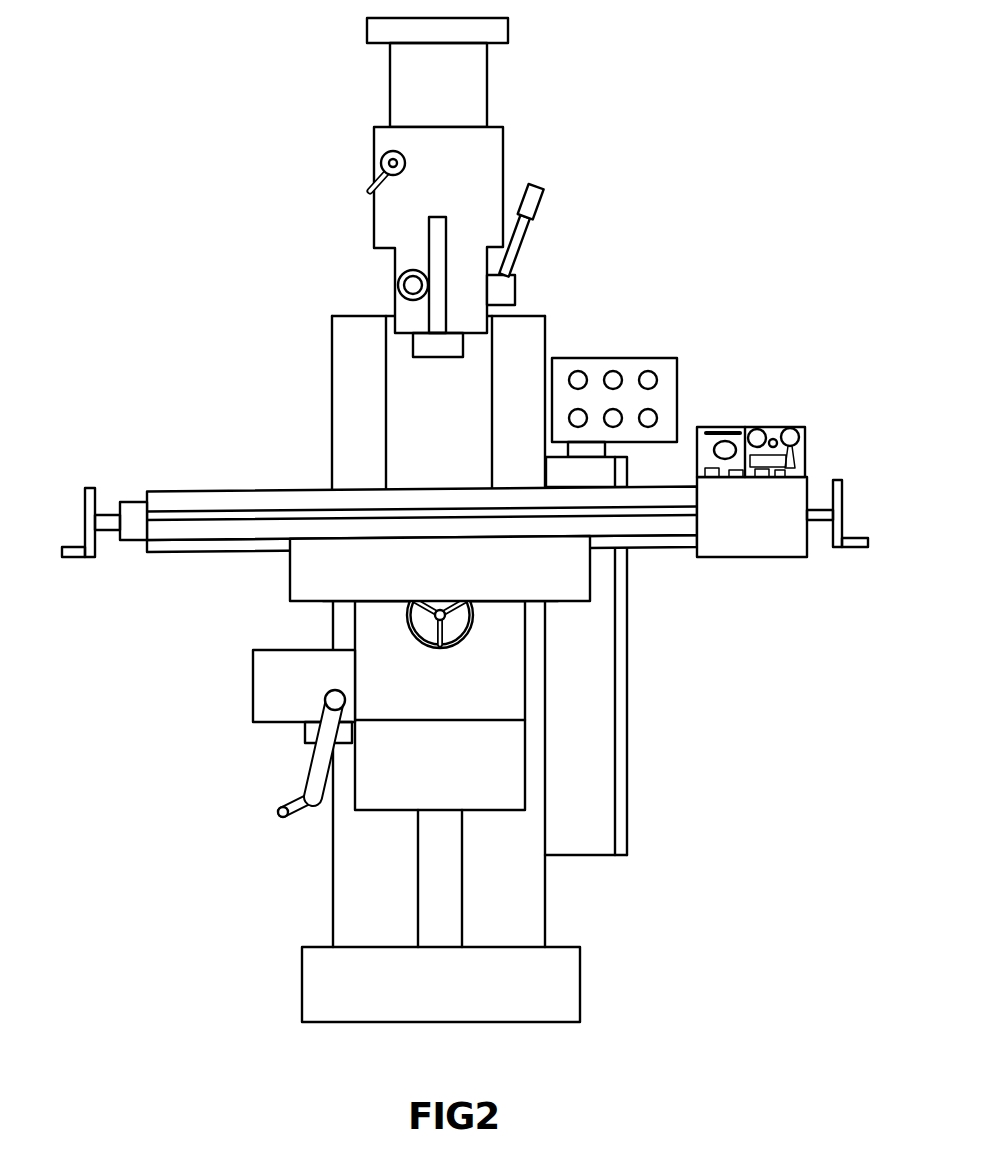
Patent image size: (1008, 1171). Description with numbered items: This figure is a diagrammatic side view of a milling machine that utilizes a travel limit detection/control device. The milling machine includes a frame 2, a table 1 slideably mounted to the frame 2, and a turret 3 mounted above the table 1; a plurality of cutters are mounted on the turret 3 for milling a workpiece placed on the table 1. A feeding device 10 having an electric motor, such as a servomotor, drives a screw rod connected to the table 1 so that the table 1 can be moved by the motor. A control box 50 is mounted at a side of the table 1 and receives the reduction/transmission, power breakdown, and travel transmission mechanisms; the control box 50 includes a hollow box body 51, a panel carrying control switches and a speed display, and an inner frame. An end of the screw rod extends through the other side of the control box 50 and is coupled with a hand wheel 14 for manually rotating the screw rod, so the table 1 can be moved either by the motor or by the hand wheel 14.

The table 1 is at (258, 490).
The frame 2 is at (362, 878).
The turret 3 is at (428, 340).
The feeding device 10 is at (818, 498).
The hand wheel 14 is at (843, 508).
The control box 50 is at (807, 422).
The hollow box body 51 is at (773, 545).